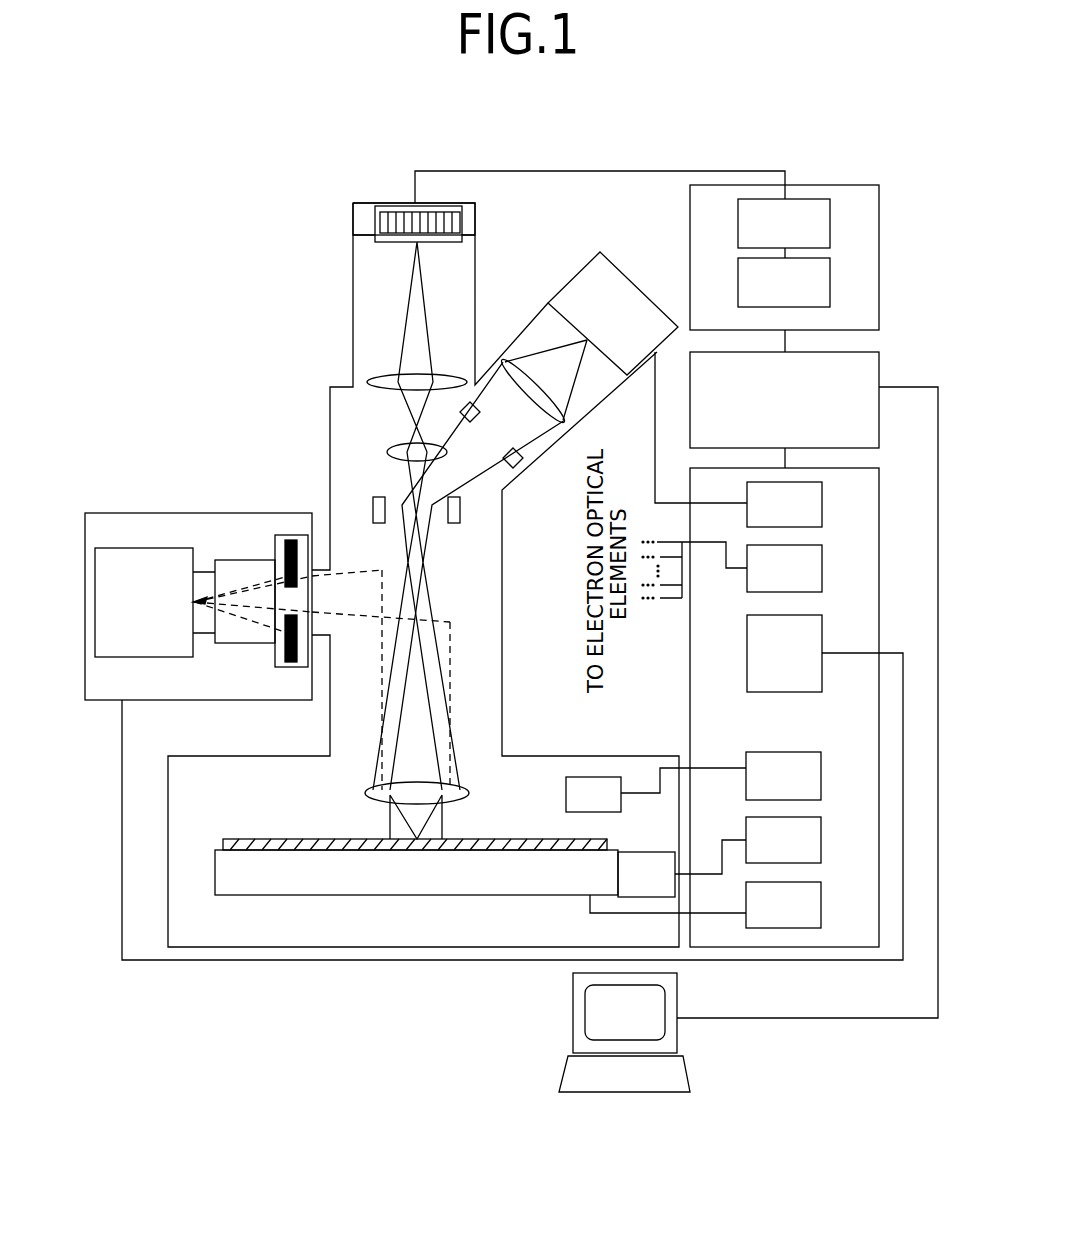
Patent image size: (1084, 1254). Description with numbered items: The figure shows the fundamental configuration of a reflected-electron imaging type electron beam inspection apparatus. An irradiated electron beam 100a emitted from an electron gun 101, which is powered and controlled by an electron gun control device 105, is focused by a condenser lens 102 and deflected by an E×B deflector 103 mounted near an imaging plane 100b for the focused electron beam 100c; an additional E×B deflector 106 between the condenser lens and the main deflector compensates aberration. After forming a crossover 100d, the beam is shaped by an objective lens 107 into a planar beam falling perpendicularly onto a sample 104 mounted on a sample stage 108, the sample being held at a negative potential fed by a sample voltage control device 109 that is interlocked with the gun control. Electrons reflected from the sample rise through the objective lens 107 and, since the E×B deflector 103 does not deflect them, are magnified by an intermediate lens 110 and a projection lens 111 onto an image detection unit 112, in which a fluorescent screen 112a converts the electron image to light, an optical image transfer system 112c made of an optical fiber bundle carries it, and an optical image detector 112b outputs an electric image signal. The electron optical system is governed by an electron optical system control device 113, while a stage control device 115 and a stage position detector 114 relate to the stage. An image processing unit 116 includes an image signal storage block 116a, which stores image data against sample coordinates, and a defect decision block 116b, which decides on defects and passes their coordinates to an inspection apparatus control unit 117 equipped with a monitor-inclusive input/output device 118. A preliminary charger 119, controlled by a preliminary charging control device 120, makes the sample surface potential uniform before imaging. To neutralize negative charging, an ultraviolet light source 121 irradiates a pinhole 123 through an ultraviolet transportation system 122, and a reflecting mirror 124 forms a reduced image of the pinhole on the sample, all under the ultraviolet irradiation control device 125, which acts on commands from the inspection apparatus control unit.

The electron gun 101 is at (613, 313).
The condenser lens 102 is at (573, 415).
The E×B deflector 103 is at (462, 508).
The sample 104 is at (522, 840).
The electron gun control device 105 is at (738, 439).
The E×B deflector for compensating aberration 106 is at (522, 462).
The objective lens 107 is at (436, 801).
The sample stage 108 is at (416, 872).
The sample voltage control device 109 is at (705, 905).
The intermediate lens 110 is at (390, 450).
The projection lens 111 is at (367, 381).
The image detection unit 112 is at (412, 217).
The fluorescent screen 112a is at (375, 242).
The optical image detector 112b is at (388, 204).
The optical image transfer system 112c is at (375, 220).
The electron optical system control device 113 is at (731, 569).
The stage position detector 114 is at (646, 874).
The stage control device 115 is at (748, 845).
The image processing unit 116 is at (797, 253).
The image signal storage block 116a is at (784, 223).
The defect decision block 116b is at (784, 282).
The inspection apparatus control unit 117 is at (784, 410).
The monitor-inclusive input/output device 118 is at (687, 1060).
The preliminary charger 119 is at (593, 794).
The preliminary charging control device 120 is at (721, 776).
The ultraviolet light source 121 is at (155, 602).
The ultraviolet transportation system 122 is at (247, 643).
The pinhole 123 is at (290, 667).
The reflecting mirror 124 is at (403, 580).
The ultraviolet irradiation control device 125 is at (784, 653).
The irradiated electron beam 100a is at (575, 380).
The imaging plane 100b is at (418, 510).
The focused electron beam 100c is at (452, 684).
The crossover 100d is at (415, 628).